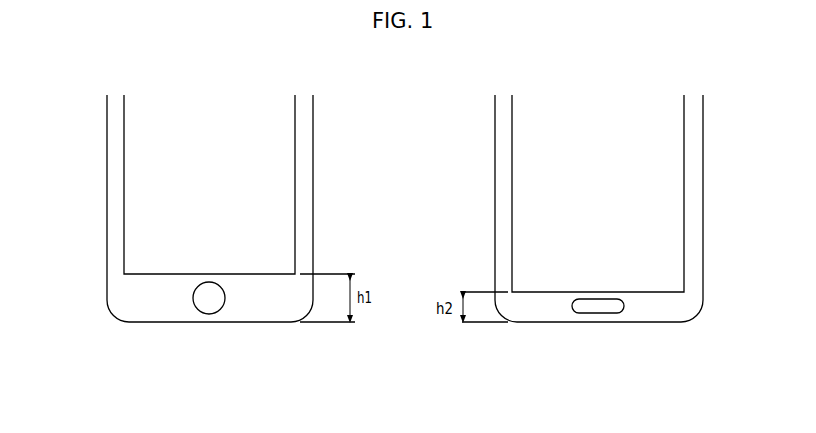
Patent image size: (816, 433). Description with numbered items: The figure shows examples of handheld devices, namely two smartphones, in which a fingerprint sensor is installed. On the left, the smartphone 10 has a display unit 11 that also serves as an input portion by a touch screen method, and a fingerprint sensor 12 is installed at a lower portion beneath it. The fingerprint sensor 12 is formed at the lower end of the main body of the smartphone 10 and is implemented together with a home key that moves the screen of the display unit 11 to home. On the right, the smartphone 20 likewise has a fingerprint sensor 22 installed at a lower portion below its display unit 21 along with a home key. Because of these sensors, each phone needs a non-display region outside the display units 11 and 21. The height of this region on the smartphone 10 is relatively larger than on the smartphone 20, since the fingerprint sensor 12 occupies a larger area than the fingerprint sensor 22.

The smartphone 10 is at (313, 157).
The display unit 11 is at (150, 190).
The fingerprint sensor 12 is at (211, 302).
The smartphone 20 is at (702, 157).
The display unit 21 is at (642, 200).
The fingerprint sensor 22 is at (610, 308).